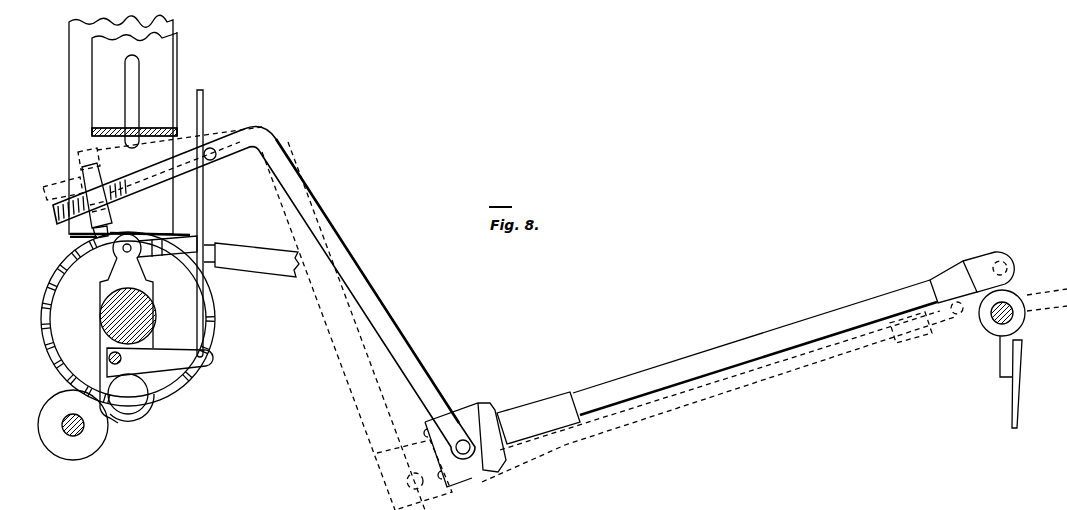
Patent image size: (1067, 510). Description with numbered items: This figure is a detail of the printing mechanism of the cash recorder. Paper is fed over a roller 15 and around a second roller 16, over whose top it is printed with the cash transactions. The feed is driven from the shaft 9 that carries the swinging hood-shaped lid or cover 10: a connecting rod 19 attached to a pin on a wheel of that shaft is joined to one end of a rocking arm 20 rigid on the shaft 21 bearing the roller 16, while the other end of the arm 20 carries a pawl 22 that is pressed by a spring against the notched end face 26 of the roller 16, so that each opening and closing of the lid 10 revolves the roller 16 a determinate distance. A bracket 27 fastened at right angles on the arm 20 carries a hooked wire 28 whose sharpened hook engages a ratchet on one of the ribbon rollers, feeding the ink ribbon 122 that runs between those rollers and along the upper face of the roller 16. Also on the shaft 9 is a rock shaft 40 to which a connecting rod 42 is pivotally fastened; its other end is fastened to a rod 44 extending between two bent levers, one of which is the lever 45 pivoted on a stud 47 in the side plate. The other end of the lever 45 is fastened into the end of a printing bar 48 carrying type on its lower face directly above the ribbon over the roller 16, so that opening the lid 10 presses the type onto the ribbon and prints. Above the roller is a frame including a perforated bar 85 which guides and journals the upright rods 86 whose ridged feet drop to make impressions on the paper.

The shaft 9 is at (995, 322).
The swinging hood-shaped lid or cover 10 is at (1025, 382).
The roller 15 is at (73, 425).
The roller 16 is at (128, 319).
The connecting rod 19 is at (218, 256).
The rocking arm 20 is at (126, 328).
The shaft 21 is at (150, 313).
The pawl 22 is at (131, 397).
The end face of roller 26 is at (52, 366).
The bracket 27 is at (160, 362).
The hooked wire 28 is at (204, 190).
The rock shaft 40 is at (1008, 281).
The connecting rod 42 is at (718, 381).
The rod 44 is at (470, 455).
The bent lever 45 is at (259, 318).
The stud 47 is at (214, 147).
The printing bar 48 is at (83, 178).
The bar 85 is at (151, 128).
The upright rod 86 is at (135, 87).
The ink ribbon 122 is at (72, 238).